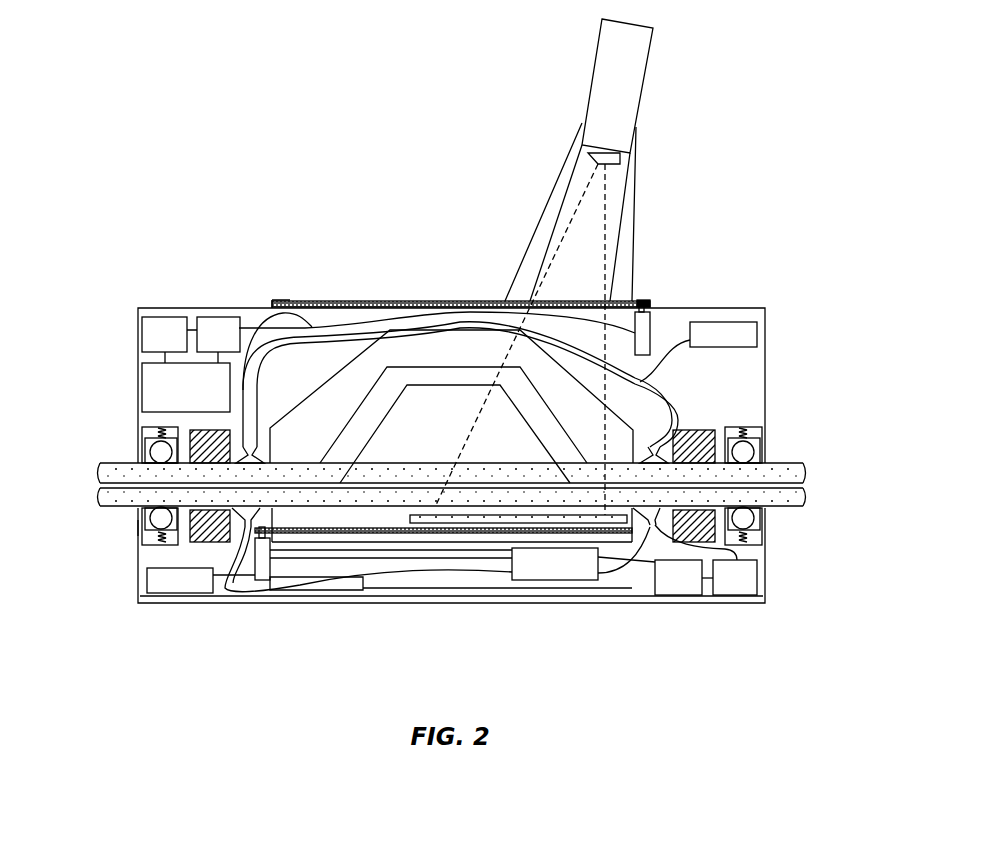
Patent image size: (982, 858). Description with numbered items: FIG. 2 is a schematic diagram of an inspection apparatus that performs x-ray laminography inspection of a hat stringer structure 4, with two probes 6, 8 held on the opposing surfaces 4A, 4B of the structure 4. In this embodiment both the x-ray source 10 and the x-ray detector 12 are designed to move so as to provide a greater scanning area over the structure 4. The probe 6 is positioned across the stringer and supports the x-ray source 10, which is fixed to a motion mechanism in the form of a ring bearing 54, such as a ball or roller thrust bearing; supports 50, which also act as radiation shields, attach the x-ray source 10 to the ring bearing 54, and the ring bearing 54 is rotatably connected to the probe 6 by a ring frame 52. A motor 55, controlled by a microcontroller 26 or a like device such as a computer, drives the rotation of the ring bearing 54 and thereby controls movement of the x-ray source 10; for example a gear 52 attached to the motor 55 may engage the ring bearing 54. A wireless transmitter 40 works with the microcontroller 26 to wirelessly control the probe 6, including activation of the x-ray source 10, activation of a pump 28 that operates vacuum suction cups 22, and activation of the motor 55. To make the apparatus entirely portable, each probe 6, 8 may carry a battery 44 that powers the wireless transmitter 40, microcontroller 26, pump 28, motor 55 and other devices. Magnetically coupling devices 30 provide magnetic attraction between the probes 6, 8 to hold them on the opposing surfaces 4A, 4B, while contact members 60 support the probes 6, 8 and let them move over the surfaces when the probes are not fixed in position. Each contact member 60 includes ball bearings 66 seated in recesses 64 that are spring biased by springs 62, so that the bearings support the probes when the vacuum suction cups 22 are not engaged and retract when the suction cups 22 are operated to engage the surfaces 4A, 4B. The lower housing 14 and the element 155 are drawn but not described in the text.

The hat stringer structure 4 is at (482, 488).
The opposing surface 4A is at (782, 467).
The opposing surface 4B is at (790, 510).
The probe 6 is at (765, 353).
The probe 8 is at (765, 553).
The x-ray source 10 is at (624, 77).
The x-ray detector 12 is at (432, 520).
The lower frame 14 is at (299, 600).
The vacuum suction cups 22 is at (650, 527).
The microcontroller 26 is at (217, 338).
The pump 28 is at (740, 330).
The magnetically coupling devices 30 is at (705, 432).
The wireless transmitter 40 is at (162, 332).
The battery 44 is at (160, 387).
The supports 50 is at (636, 165).
The ring frame 52 is at (278, 300).
The ring bearing 54 is at (310, 300).
The motor 55 is at (643, 323).
The contact members 60 is at (138, 527).
The springs 62 is at (145, 433).
The recesses 64 is at (145, 443).
The ball bearings 66 is at (140, 458).
The reference mark 155 is at (643, 303).